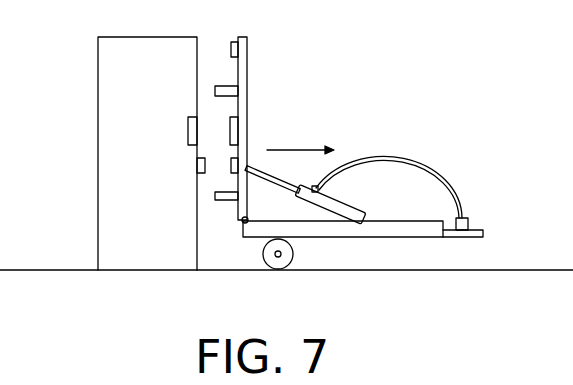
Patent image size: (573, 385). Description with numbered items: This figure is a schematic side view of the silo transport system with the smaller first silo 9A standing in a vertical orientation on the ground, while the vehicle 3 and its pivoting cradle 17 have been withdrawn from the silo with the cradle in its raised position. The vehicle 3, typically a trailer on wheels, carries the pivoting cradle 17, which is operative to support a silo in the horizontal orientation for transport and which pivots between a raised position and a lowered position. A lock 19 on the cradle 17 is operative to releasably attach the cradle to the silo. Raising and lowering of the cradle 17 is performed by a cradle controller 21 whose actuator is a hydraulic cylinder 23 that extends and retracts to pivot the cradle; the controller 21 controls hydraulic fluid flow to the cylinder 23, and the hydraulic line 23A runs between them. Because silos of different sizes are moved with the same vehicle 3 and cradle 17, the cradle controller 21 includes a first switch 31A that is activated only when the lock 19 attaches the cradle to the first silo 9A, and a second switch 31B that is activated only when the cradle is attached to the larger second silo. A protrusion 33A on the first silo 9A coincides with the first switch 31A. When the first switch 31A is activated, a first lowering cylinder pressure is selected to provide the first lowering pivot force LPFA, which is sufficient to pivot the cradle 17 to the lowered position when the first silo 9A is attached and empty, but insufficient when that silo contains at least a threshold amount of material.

The first silo 9A is at (98, 113).
The protrusion 33A is at (197, 165).
The first switch 31A is at (233, 173).
The second switch 31B is at (232, 50).
The pivoting cradle 17 is at (247, 77).
The lock 19 is at (234, 128).
The hydraulic cylinder 23 is at (313, 212).
The actuator hose 23A is at (318, 191).
The vehicle 3 is at (418, 237).
The cradle controller 21 is at (468, 223).
The first lowering pivot force LPFA is at (297, 148).